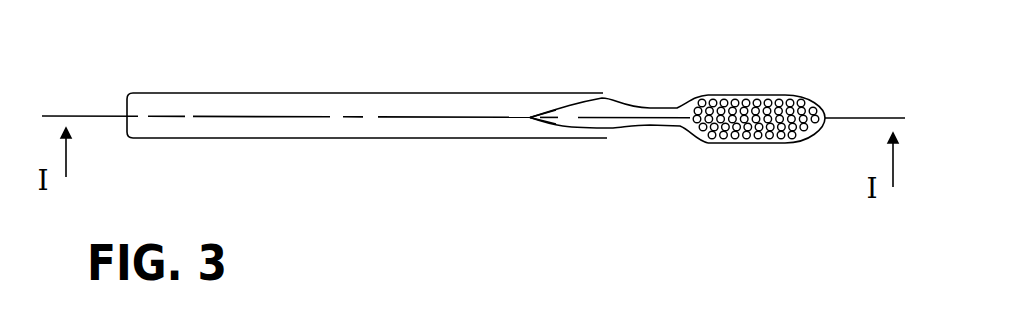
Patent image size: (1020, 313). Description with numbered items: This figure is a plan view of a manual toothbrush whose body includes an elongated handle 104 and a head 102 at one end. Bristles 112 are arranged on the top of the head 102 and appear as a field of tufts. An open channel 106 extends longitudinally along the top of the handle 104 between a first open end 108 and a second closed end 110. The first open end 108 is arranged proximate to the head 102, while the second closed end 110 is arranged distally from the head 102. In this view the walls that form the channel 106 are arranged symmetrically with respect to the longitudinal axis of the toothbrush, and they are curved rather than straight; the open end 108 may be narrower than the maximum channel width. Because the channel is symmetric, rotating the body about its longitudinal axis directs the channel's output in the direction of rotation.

The head 102 is at (823, 182).
The handle 104 is at (633, 183).
The open channel 106 is at (606, 130).
The first open end 108 is at (603, 97).
The second closed end 110 is at (530, 117).
The bristles 112 is at (786, 100).